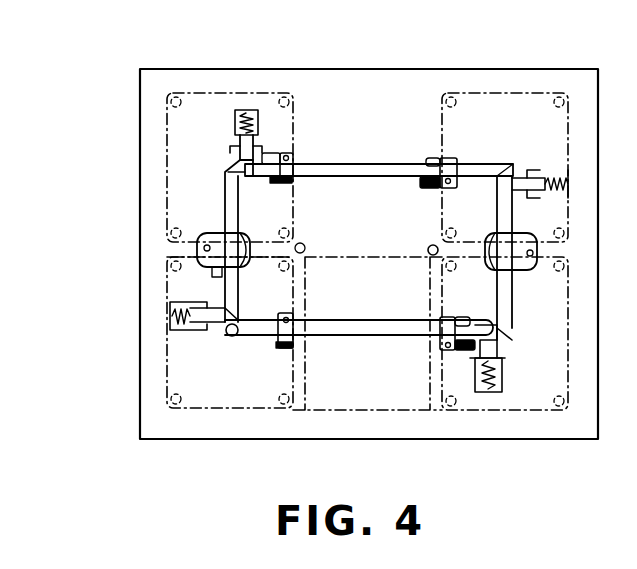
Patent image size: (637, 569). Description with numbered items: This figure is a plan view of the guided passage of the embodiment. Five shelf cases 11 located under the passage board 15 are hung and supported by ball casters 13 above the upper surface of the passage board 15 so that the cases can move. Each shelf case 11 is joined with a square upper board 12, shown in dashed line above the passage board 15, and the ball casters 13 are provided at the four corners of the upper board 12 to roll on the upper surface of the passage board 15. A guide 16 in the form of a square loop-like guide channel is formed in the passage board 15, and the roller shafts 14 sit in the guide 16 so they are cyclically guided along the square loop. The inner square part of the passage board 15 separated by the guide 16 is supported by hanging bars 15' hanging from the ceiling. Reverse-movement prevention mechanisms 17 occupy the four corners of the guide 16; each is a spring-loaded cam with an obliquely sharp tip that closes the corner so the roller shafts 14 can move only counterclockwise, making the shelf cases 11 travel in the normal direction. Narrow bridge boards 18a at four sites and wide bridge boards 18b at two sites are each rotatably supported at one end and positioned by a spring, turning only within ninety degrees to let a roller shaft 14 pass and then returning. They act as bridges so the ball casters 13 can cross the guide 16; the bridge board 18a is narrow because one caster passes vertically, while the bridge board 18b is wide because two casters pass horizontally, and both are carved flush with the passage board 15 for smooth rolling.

The shelf case 11 is at (304, 326).
The upper board 12 is at (167, 163).
The ball caster 13 is at (170, 96).
The roller shaft 14 is at (225, 170).
The passage board 15 is at (369, 233).
The hanging bar 15' is at (389, 276).
The guide 16 is at (412, 164).
The reverse-movement prevention mechanism 17 is at (240, 158).
The narrow bridge board 18a is at (292, 158).
The wide bridge board 18b is at (212, 270).